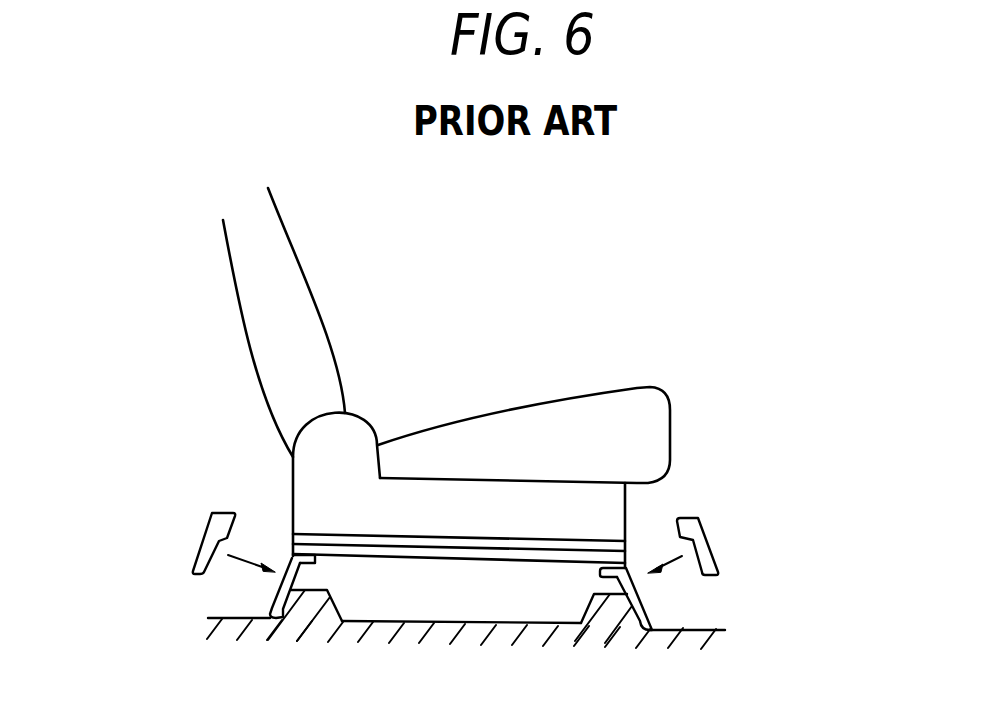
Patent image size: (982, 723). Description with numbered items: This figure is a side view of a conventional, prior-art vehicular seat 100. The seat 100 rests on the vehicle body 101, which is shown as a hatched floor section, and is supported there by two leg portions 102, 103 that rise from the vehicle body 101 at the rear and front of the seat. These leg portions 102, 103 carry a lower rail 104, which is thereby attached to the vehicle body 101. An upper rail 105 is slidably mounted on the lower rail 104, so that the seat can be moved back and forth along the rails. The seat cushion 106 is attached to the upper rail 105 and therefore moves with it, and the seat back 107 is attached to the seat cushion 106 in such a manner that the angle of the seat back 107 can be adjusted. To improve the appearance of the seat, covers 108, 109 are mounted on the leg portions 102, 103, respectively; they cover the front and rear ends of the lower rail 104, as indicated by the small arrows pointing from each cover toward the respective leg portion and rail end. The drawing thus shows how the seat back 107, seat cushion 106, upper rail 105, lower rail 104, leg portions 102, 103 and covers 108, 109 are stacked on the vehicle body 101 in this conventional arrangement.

The seat 100 is at (711, 288).
The vehicle body 101 is at (707, 629).
The leg portion 102 is at (645, 612).
The leg portion 103 is at (278, 608).
The lower rail 104 is at (405, 556).
The upper rail 105 is at (492, 556).
The seat cushion 106 is at (493, 413).
The seat back 107 is at (290, 232).
The cover 108 is at (704, 526).
The cover 109 is at (204, 529).